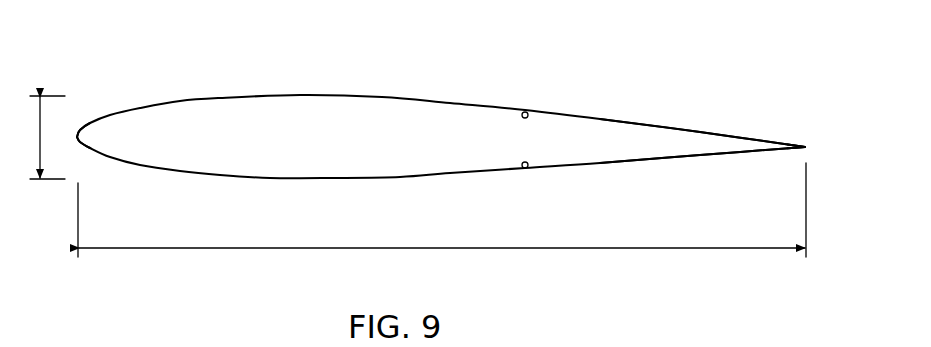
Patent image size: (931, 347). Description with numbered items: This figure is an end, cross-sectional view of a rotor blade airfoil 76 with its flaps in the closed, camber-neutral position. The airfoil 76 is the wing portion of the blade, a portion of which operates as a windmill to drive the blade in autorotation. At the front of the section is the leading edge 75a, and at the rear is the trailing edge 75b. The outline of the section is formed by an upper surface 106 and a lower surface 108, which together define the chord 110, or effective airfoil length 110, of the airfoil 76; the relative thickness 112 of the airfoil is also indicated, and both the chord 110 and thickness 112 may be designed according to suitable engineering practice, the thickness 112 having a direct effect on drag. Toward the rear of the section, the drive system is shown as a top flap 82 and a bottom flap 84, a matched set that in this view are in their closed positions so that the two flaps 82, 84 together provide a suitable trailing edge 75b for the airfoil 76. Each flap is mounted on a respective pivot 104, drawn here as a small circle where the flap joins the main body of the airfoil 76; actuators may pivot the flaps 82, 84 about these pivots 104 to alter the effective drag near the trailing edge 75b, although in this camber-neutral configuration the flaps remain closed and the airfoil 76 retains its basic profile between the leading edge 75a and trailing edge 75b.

The leading edge 75a is at (77, 135).
The trailing edge 75b is at (805, 145).
The airfoil 76 is at (445, 137).
The top flap 82 is at (642, 121).
The bottom flap 84 is at (650, 163).
The pivots 104 is at (525, 112).
The upper surface 106 is at (382, 96).
The lower surface 108 is at (307, 181).
The chord 110 is at (412, 248).
The thickness 112 is at (41, 128).